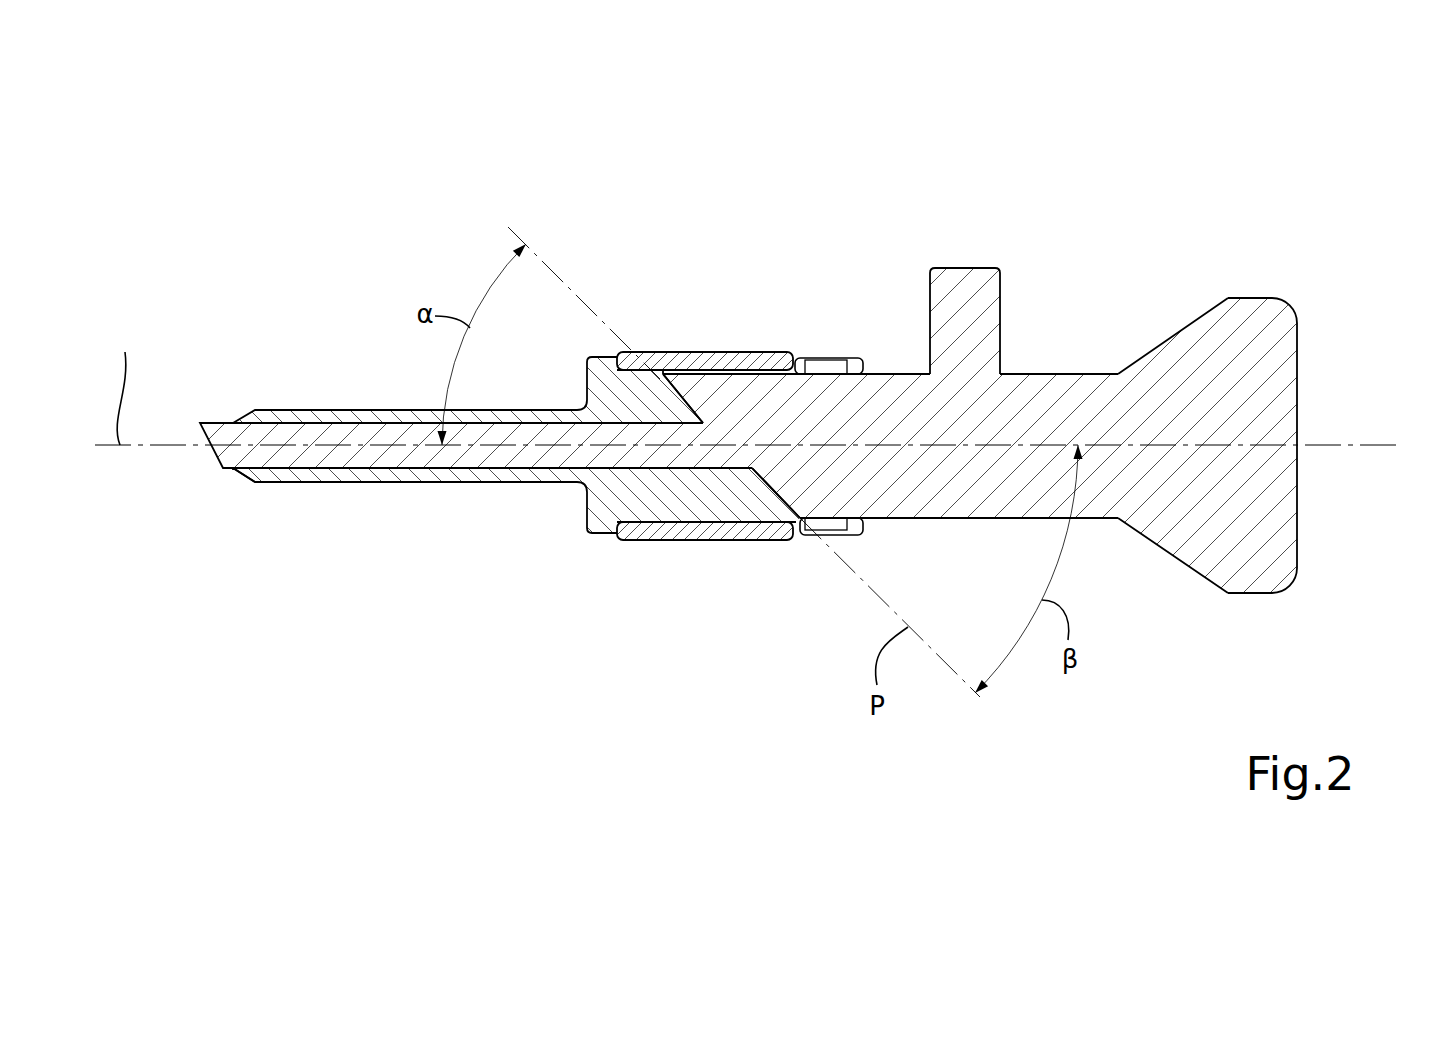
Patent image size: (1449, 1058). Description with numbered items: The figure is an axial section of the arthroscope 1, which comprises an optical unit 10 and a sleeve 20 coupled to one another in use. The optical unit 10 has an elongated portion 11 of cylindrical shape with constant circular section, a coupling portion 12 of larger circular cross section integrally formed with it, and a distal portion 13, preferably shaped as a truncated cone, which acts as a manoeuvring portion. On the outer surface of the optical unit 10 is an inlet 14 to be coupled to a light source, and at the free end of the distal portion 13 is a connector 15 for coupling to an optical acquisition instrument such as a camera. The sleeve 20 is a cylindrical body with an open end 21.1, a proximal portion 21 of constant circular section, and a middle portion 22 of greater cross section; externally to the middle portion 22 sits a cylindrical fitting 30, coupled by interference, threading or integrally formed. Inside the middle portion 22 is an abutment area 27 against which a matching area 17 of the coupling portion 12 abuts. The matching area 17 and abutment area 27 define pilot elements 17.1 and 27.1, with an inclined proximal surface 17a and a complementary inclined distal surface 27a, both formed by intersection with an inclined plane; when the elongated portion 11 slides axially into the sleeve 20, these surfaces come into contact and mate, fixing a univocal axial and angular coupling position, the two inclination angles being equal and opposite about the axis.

The arthroscope 1 is at (488, 608).
The optical unit 10 is at (1267, 270).
The elongated portion 11 is at (228, 455).
The coupling portion 12 is at (888, 412).
The distal portion 13 is at (1198, 353).
The inlet 14 is at (970, 272).
The connector 15 is at (1293, 382).
The matching area 17 is at (757, 483).
The pilot element 17.1 is at (667, 392).
The proximal surface 17a is at (772, 490).
The sleeve 20 is at (353, 348).
The proximal portion 21 is at (292, 408).
The open end 21.1 is at (243, 475).
The middle portion 22 is at (598, 393).
The abutment area 27 is at (795, 500).
The pilot element 27.1 is at (700, 412).
The distal surface 27a is at (690, 405).
The cylindrical fitting 30 is at (672, 360).